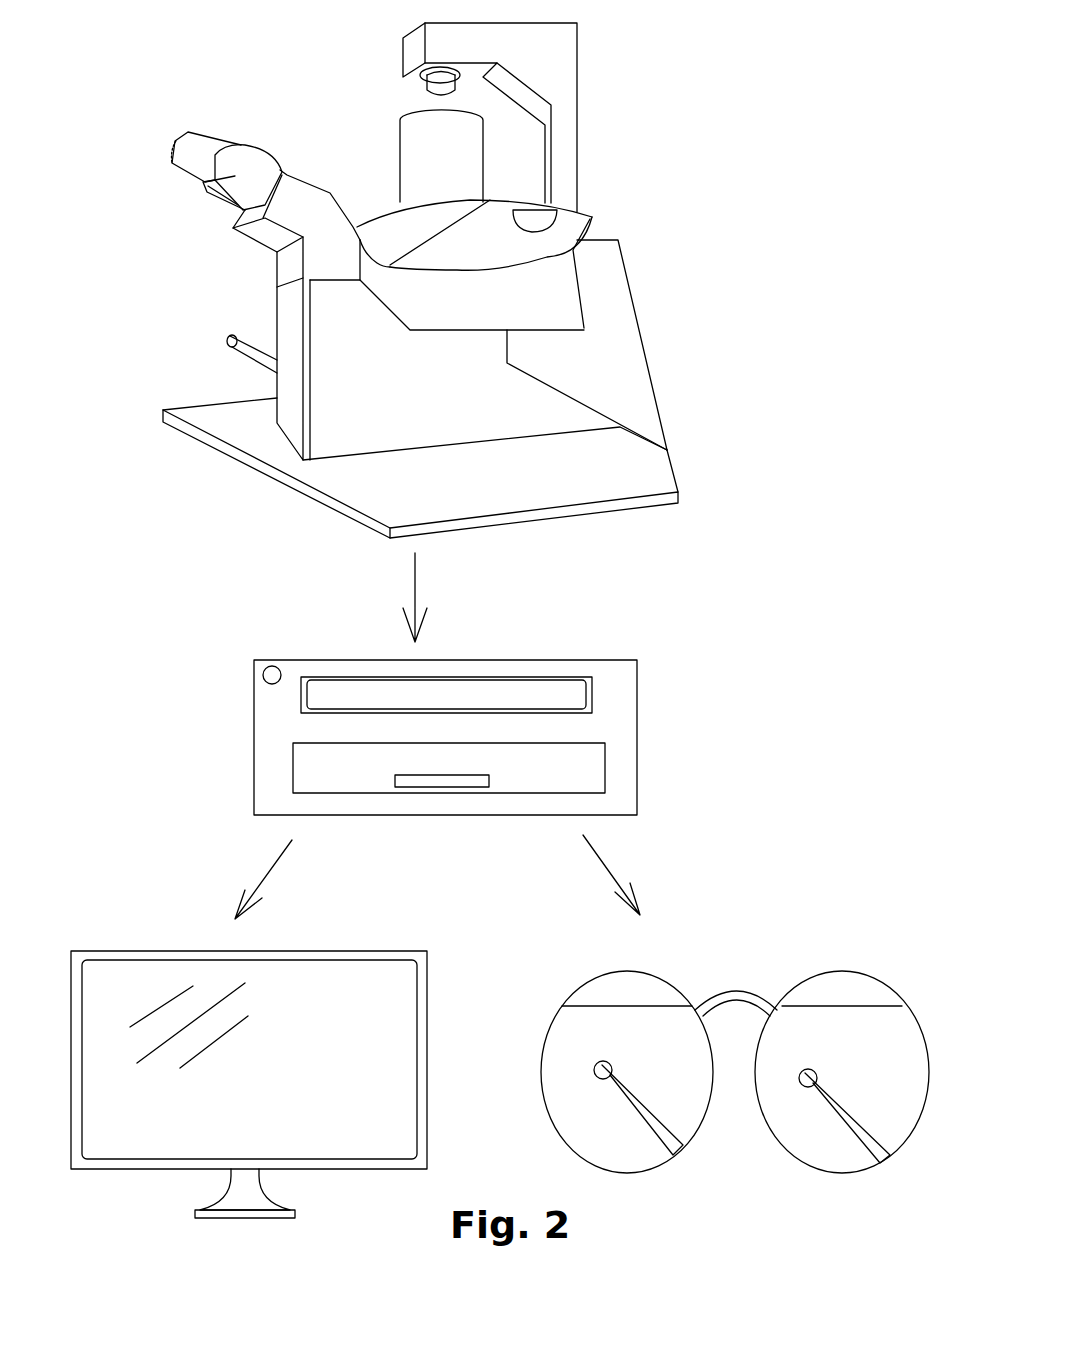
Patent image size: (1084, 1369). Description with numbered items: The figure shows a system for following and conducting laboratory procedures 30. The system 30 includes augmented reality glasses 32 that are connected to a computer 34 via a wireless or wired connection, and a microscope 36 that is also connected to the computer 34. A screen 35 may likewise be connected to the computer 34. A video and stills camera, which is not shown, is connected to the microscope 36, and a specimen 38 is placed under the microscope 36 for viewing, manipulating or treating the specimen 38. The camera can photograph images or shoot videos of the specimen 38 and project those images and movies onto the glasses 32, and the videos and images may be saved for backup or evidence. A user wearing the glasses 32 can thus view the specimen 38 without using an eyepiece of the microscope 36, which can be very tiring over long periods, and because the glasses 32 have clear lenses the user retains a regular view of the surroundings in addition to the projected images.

The system for following and conducting laboratory procedures 30 is at (797, 595).
The augmented reality glasses 32 is at (852, 973).
The computer 34 is at (262, 660).
The screen 35 is at (140, 951).
The microscope 36 is at (578, 130).
The specimen 38 is at (400, 125).